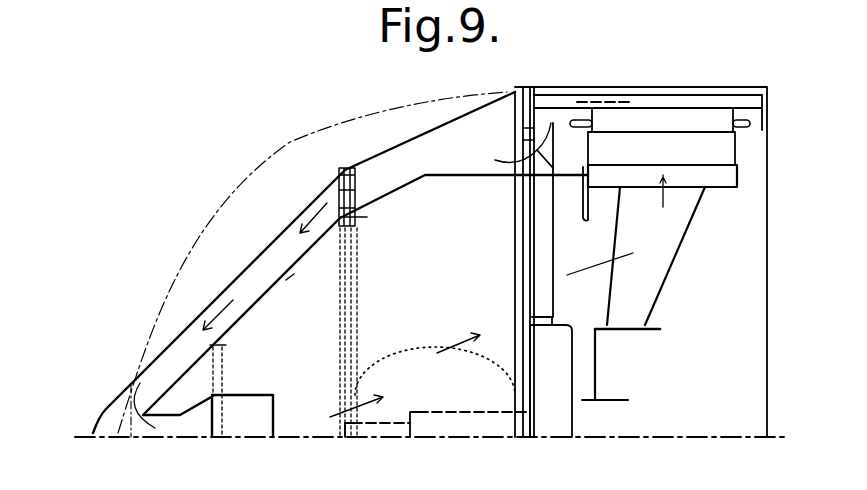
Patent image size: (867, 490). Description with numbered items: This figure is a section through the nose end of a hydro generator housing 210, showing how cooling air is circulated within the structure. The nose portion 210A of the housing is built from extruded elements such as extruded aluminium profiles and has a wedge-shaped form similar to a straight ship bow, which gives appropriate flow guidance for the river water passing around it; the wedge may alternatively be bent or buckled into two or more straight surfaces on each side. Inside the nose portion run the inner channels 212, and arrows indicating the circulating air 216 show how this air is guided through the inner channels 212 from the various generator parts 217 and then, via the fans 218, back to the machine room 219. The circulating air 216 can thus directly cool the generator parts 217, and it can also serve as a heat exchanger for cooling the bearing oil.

The hydro generator housing 210 is at (262, 250).
The inner channels 212 is at (257, 295).
The nose portion 210A is at (150, 362).
The circulating air 216 is at (418, 158).
The generator parts 217 is at (720, 172).
The fans 218 is at (247, 407).
The machine room 219 is at (460, 308).